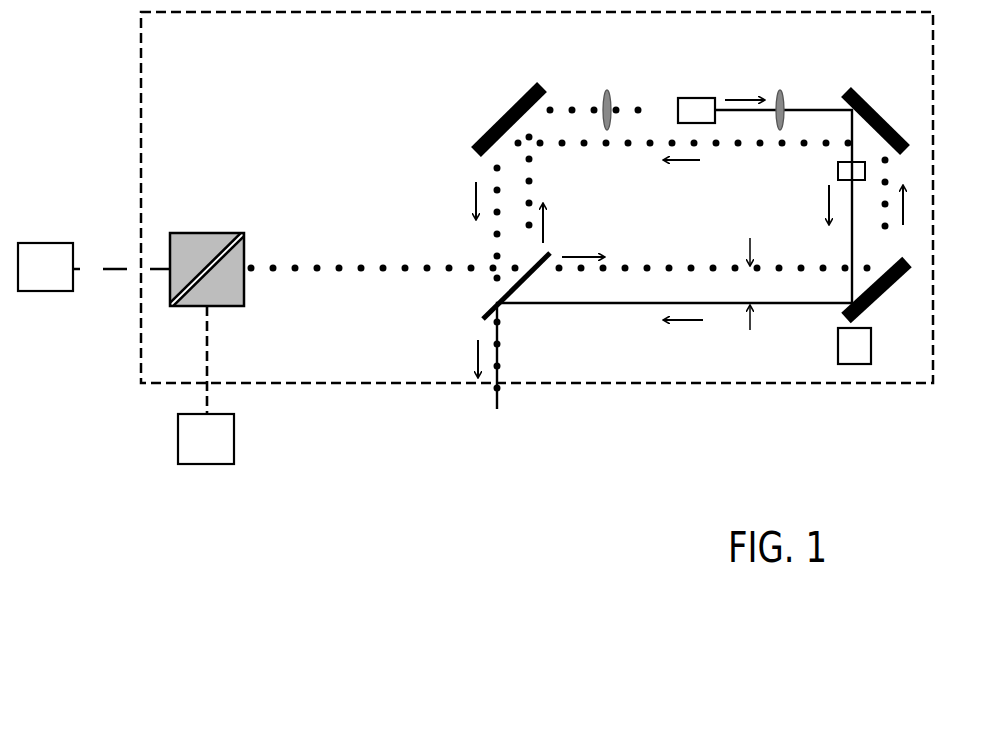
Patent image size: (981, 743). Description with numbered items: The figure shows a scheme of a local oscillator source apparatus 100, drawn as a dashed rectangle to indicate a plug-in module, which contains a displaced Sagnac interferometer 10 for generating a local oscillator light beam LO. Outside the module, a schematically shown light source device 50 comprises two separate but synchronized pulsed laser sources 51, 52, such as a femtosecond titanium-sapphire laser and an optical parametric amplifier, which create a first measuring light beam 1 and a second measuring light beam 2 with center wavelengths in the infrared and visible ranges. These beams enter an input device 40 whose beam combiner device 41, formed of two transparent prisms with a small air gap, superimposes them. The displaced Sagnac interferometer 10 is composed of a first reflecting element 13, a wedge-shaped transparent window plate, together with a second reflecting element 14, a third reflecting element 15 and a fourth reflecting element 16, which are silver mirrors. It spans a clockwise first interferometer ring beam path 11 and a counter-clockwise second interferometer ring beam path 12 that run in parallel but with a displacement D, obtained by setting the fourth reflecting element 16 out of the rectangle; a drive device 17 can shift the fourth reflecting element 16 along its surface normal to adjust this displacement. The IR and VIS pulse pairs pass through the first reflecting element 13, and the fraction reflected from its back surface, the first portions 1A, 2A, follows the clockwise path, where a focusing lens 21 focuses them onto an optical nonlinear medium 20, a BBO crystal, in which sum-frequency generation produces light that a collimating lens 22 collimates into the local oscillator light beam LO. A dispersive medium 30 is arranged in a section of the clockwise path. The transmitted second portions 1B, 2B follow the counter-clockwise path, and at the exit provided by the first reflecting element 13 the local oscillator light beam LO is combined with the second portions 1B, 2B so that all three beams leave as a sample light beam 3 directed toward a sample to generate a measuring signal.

The local oscillator source apparatus 100 is at (192, 54).
The light source device 50 is at (277, 330).
The pulsed laser source 51 is at (47, 286).
The pulsed laser source 52 is at (197, 435).
The first measuring light beam 1 is at (118, 268).
The second measuring light beam 2 is at (207, 365).
The sample light beam 3 is at (497, 377).
The input device 40 is at (218, 240).
The beam combiner device 41 is at (215, 229).
The displaced Sagnac interferometer 10 is at (693, 222).
The first interferometer ring beam path 11 is at (690, 204).
The second interferometer ring beam path 12 is at (689, 262).
The first reflecting element 13 is at (474, 313).
The second reflecting element 14 is at (493, 118).
The third reflecting element 15 is at (885, 112).
The fourth reflecting element 16 is at (882, 302).
The drive device 17 is at (848, 350).
The optical nonlinear medium 20 is at (697, 92).
The focusing lens 21 is at (607, 87).
The collimating lens 22 is at (780, 88).
The dispersive medium 30 is at (838, 168).
The first portion of the first measuring light beam 1A is at (532, 170).
The first portion of the second measuring light beam 2A is at (701, 202).
The second portion of the first measuring light beam 1B is at (495, 179).
The second portion of the second measuring light beam 2B is at (530, 241).
The local oscillator light beam LO is at (803, 110).
The displacement D is at (752, 302).